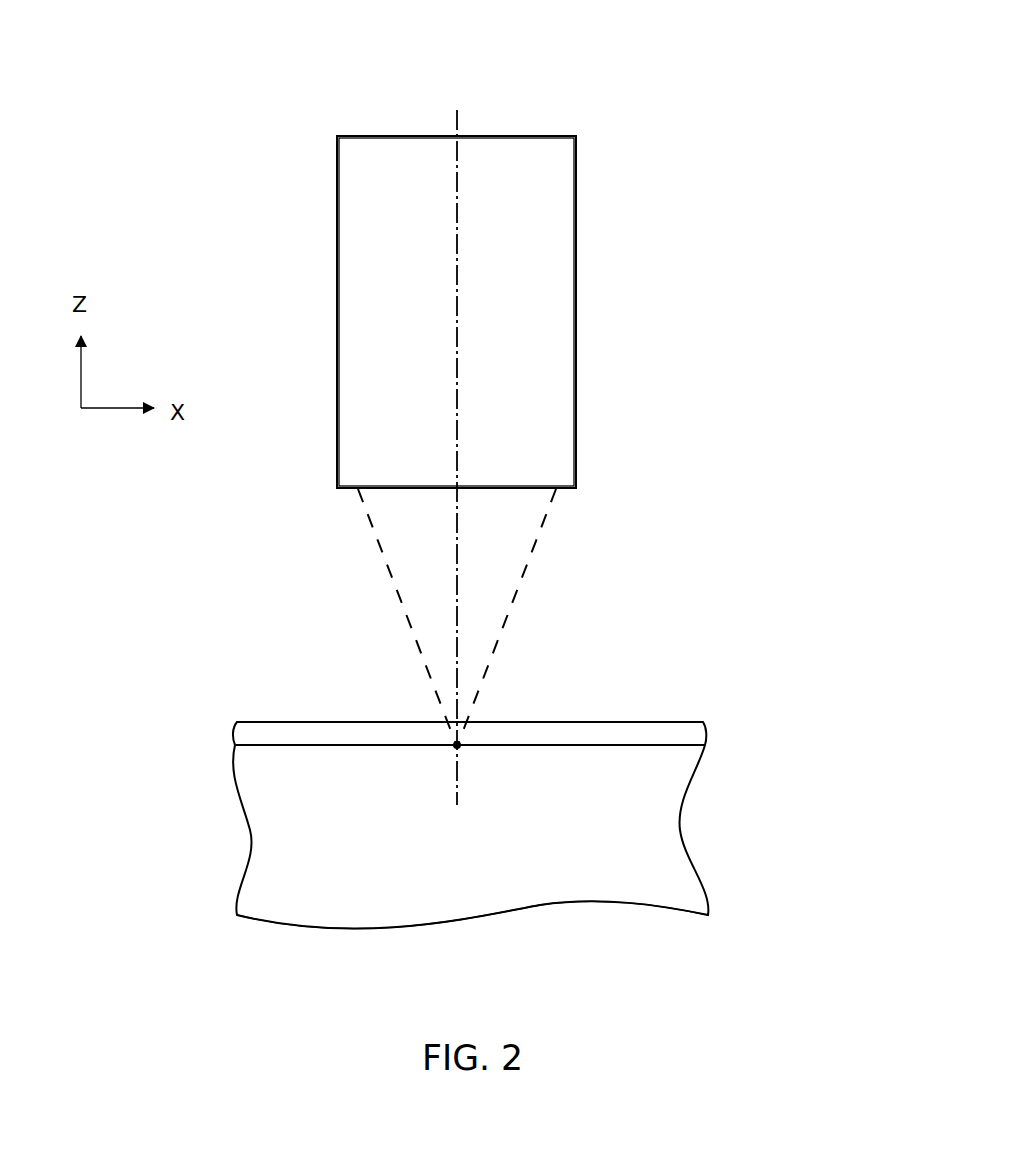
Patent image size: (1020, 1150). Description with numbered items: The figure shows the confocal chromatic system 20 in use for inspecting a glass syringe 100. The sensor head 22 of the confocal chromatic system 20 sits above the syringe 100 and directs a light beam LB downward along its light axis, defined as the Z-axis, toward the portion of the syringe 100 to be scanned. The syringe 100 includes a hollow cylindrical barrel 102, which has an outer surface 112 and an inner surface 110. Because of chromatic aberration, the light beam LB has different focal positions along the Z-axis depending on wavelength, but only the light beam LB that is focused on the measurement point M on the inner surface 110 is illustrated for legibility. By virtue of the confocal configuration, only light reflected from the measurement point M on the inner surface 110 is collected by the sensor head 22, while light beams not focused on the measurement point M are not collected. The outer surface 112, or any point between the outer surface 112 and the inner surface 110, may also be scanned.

The confocal chromatic system 20 is at (309, 148).
The sensor head 22 is at (576, 217).
The light beam LB is at (548, 525).
The syringe 100 is at (362, 680).
The barrel 102 is at (222, 716).
The inner surface 110 is at (345, 746).
The outer surface 112 is at (648, 722).
The measurement point M is at (467, 758).